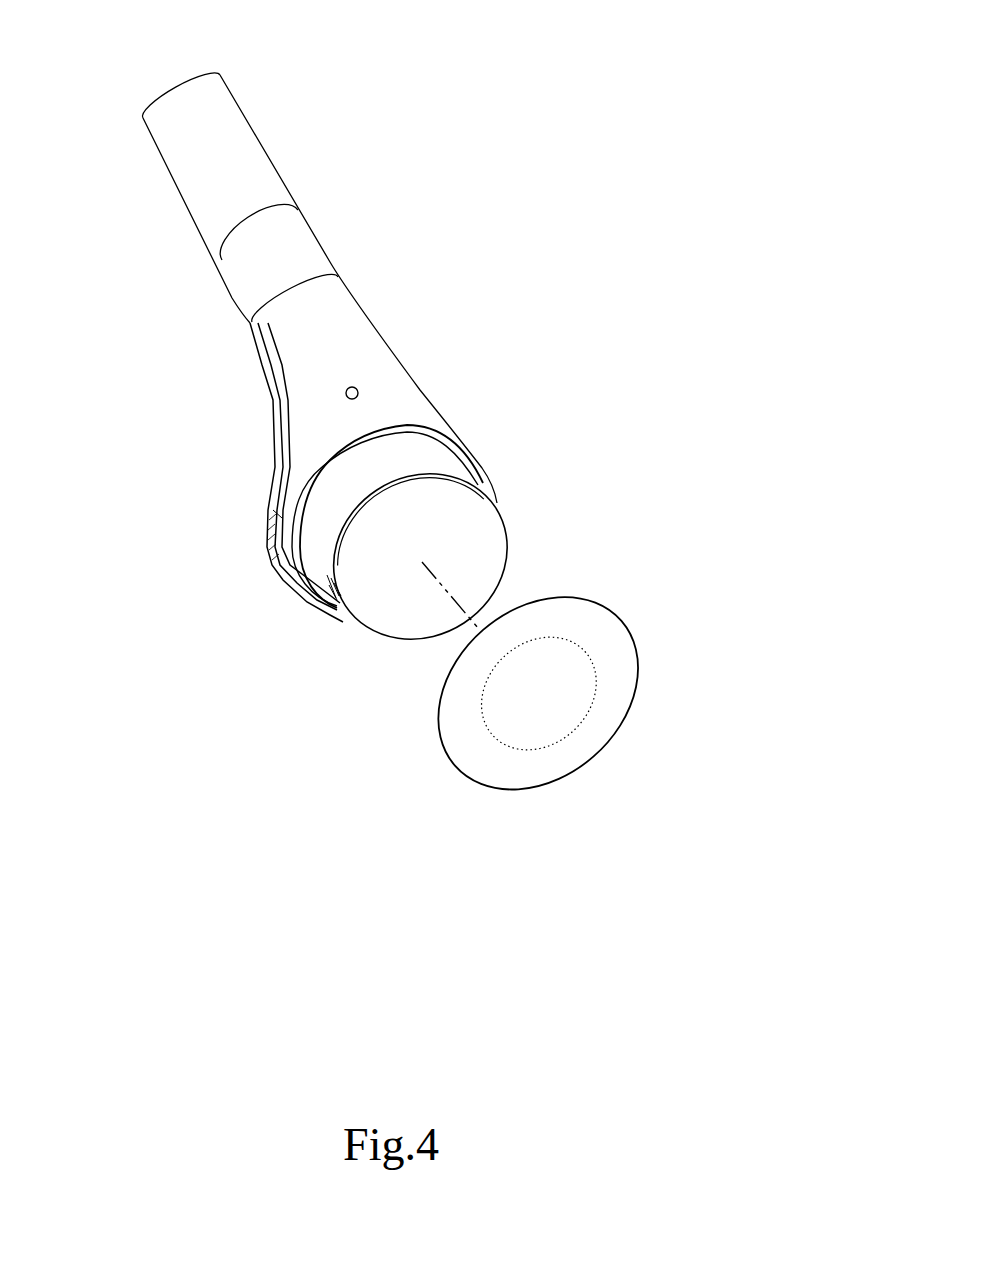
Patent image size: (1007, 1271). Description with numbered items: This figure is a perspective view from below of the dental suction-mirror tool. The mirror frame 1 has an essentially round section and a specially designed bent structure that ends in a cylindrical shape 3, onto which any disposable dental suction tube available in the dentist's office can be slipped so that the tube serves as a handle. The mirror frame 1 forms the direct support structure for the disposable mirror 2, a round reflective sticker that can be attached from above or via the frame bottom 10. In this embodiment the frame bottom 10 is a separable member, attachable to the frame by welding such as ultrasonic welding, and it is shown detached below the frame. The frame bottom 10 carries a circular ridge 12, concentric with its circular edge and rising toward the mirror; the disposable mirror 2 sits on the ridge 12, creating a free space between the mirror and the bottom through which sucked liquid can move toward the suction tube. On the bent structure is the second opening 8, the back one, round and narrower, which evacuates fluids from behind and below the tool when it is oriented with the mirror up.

The mirror frame 1 is at (450, 372).
The disposable mirror 2 is at (477, 508).
The cylindrical shape 3 is at (298, 130).
The second opening 8 is at (327, 420).
The frame bottom 10 is at (571, 775).
The circular ridge 12 is at (464, 724).